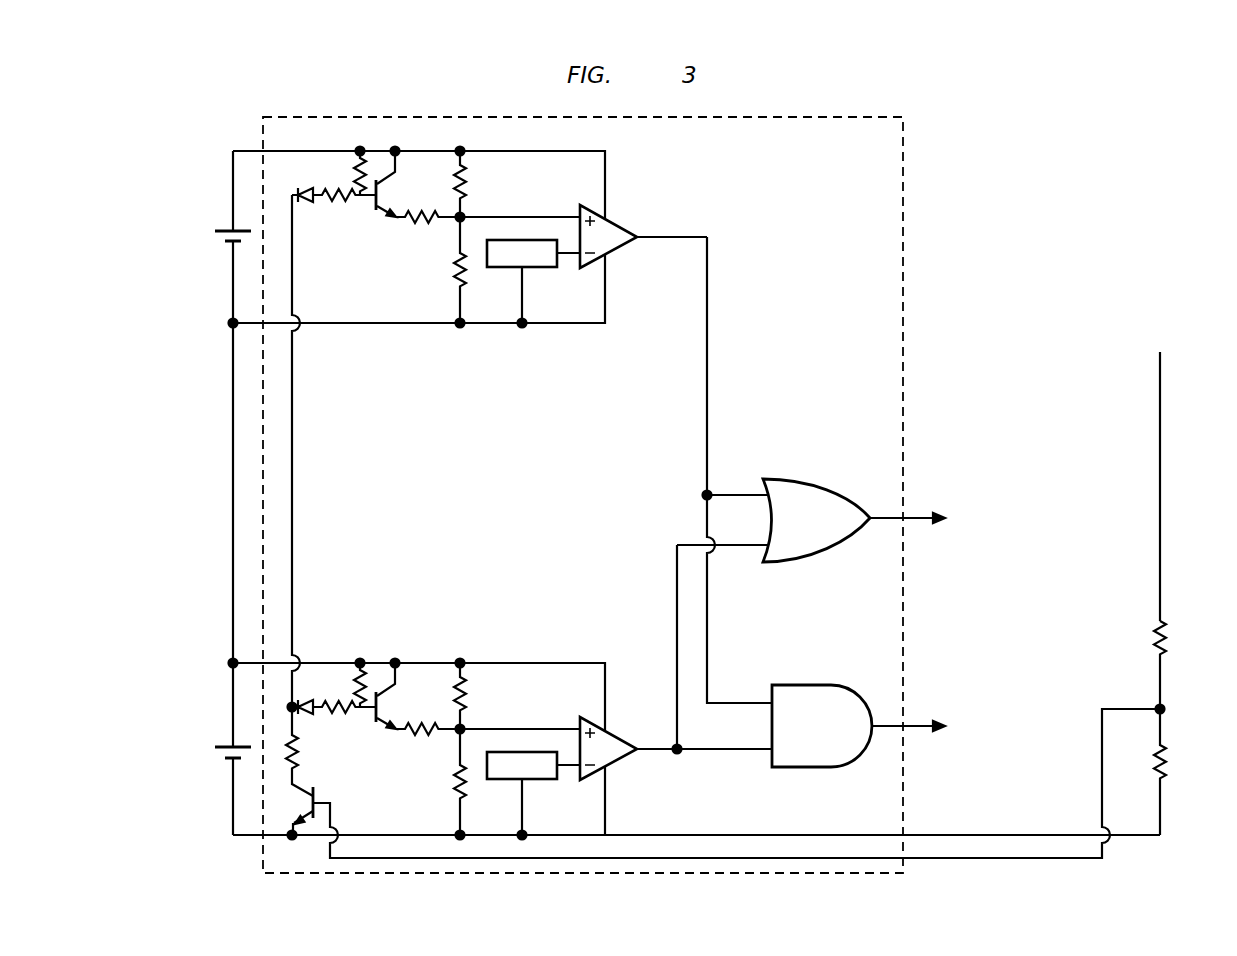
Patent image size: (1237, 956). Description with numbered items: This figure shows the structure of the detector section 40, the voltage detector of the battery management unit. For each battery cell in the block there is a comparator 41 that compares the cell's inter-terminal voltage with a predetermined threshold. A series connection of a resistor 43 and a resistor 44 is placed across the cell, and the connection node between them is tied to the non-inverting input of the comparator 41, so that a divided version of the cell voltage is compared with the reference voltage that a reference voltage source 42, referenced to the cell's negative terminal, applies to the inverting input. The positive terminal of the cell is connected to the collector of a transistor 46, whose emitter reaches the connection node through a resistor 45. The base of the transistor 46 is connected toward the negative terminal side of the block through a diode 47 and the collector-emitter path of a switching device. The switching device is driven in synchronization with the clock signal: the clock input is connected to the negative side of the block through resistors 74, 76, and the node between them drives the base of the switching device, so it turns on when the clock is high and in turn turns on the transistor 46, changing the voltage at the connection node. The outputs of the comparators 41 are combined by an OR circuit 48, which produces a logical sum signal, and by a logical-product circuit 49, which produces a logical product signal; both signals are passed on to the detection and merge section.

The detector section 40 is at (903, 140).
The comparator 41 is at (620, 223).
The reference voltage source 42 is at (541, 268).
The resistor 43 is at (468, 160).
The resistor 44 is at (465, 286).
The resistor 45 is at (413, 222).
The transistor 46 is at (384, 213).
The diode 47 is at (311, 205).
The OR circuit 48 is at (815, 478).
The AND circuit 49 is at (815, 685).
The resistor 74 is at (1170, 756).
The resistor 76 is at (1170, 629).